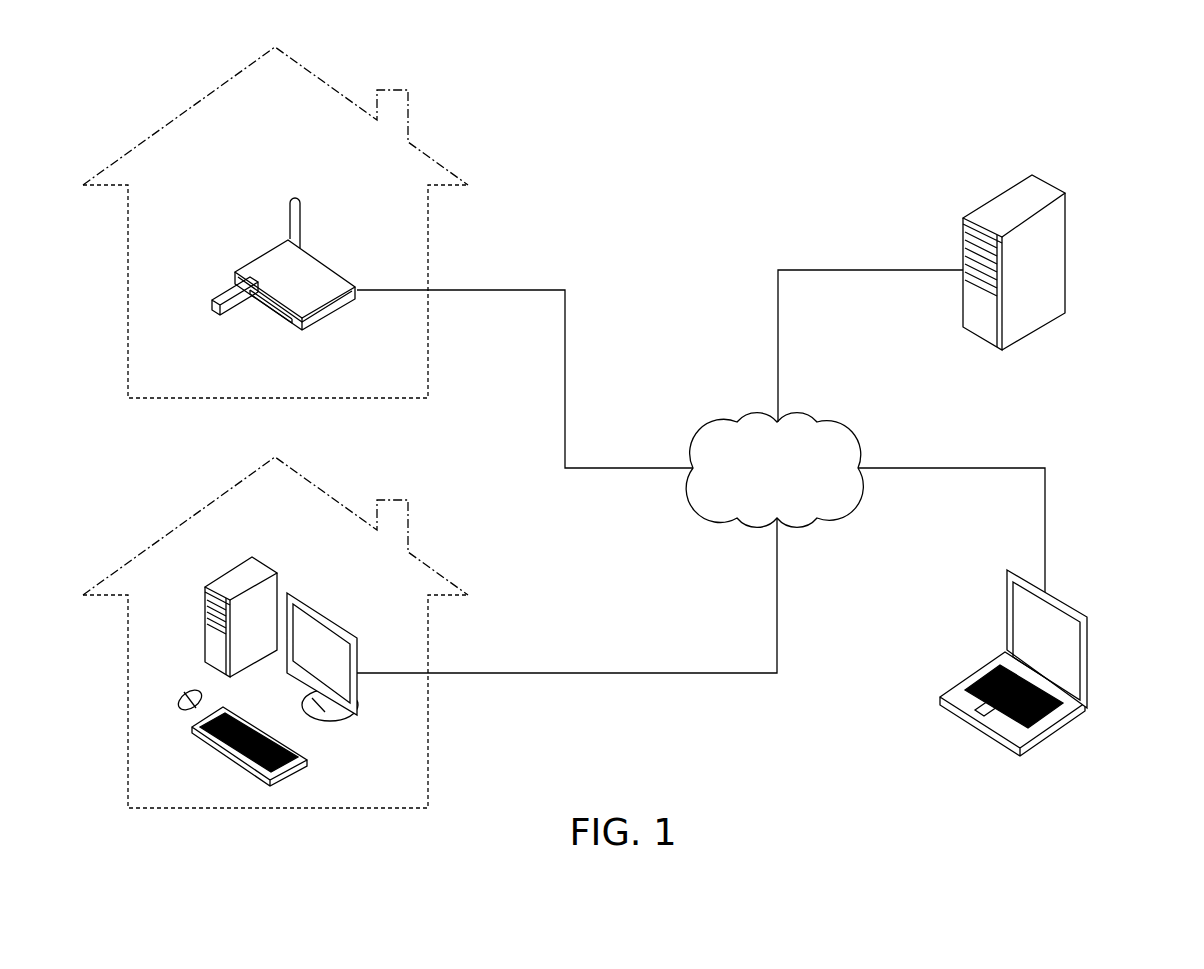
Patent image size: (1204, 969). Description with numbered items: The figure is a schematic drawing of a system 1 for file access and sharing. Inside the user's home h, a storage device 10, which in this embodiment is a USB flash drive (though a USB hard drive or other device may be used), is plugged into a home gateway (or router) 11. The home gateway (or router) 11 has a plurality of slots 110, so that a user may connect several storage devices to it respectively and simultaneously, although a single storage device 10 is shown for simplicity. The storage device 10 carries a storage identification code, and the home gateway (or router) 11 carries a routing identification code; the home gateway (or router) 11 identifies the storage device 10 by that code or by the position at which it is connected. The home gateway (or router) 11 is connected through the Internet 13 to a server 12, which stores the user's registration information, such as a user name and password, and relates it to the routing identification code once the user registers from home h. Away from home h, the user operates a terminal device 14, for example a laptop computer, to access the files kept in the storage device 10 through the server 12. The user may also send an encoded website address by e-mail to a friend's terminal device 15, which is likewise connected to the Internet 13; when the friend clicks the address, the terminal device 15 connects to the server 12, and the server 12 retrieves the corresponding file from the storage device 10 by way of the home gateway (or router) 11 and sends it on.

The system for file access and sharing 1 is at (1110, 117).
The home h is at (145, 140).
The storage device 10 is at (220, 293).
The home gateway (or router) 11 is at (327, 277).
The slots 110 is at (265, 310).
The server 12 is at (1050, 268).
The Internet 13 is at (843, 507).
The terminal device 14 is at (1063, 657).
The friend's terminal device 15 is at (237, 582).